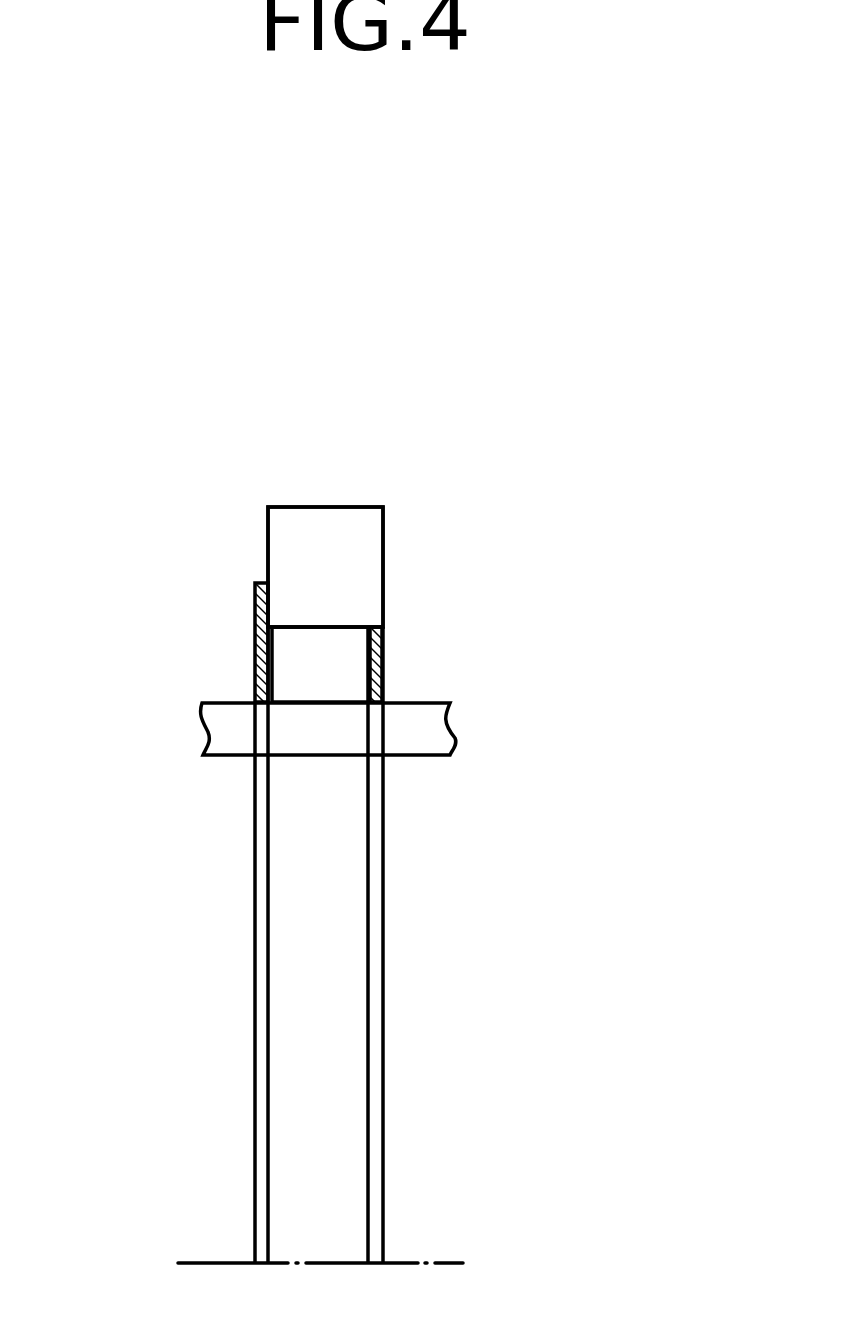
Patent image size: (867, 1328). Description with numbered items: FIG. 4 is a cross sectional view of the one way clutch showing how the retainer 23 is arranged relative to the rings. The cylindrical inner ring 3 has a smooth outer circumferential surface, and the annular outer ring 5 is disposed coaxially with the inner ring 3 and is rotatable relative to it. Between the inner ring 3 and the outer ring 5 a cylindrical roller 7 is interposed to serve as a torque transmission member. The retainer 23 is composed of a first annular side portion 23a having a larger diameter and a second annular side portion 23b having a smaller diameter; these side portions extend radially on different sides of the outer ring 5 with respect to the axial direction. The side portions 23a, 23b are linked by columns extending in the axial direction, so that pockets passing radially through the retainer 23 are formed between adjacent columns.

The retainer 23 is at (448, 433).
The outer ring 5 is at (332, 530).
The cylindrical roller 7 is at (315, 625).
The first annular side portion 23a is at (257, 603).
The second annular side portion 23b is at (385, 660).
The inner ring 3 is at (450, 703).